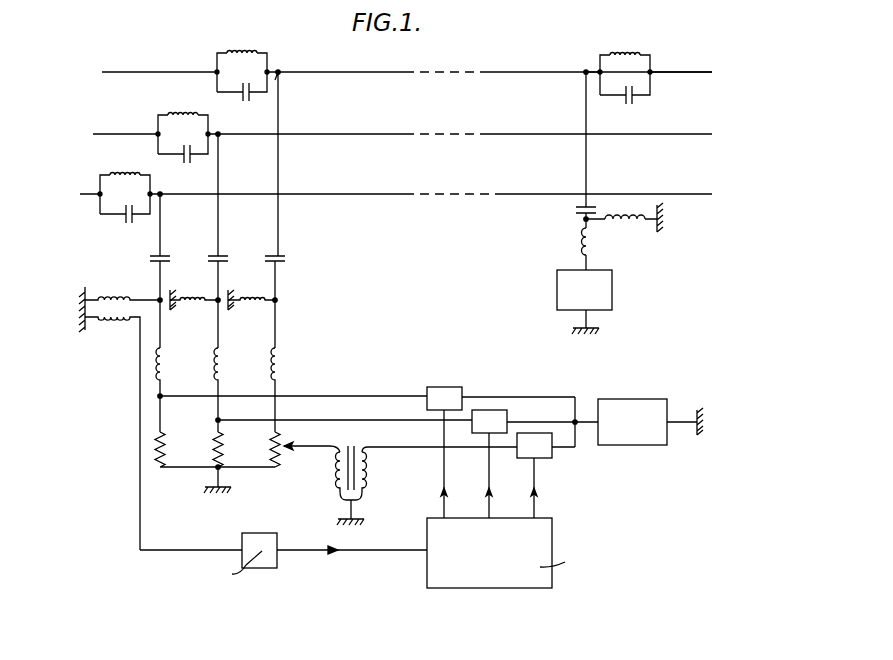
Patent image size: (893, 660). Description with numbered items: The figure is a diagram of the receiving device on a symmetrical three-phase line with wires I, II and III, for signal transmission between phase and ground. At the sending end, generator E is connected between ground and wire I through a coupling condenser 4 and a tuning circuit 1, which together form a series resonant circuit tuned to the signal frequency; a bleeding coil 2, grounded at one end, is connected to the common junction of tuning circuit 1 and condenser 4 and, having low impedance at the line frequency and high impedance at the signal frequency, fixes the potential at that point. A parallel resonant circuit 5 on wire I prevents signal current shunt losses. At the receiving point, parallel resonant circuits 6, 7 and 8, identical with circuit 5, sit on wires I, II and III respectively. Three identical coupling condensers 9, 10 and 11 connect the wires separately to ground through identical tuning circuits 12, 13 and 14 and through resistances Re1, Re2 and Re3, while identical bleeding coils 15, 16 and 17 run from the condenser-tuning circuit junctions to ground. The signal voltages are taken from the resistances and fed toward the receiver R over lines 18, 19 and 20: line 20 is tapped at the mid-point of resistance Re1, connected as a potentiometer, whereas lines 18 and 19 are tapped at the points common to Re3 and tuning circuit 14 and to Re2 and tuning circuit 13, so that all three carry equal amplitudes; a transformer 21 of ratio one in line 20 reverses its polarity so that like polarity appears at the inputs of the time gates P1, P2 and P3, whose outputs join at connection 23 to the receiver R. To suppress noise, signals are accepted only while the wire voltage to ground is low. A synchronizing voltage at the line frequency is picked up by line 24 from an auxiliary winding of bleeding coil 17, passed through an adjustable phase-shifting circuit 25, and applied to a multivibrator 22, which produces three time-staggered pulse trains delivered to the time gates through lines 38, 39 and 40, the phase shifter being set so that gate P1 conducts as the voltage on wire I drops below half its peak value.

The wire I is at (289, 73).
The wire II is at (289, 135).
The wire III is at (289, 195).
The tuning circuit 1 is at (590, 249).
The bleeding coil 2 is at (636, 223).
The coupling condenser 4 is at (577, 209).
The parallel resonant circuit 5 is at (609, 72).
The parallel resonant circuit 6 is at (226, 72).
The parallel resonant circuit 7 is at (167, 134).
The parallel resonant circuit 8 is at (109, 194).
The coupling condenser 9 is at (281, 255).
The coupling condenser 10 is at (224, 255).
The coupling condenser 11 is at (166, 255).
The tuning circuit 12 is at (280, 358).
The tuning circuit 13 is at (223, 358).
The tuning circuit 14 is at (165, 358).
The bleeding coil 15 is at (246, 298).
The bleeding coil 16 is at (186, 298).
The bleeding coil 17 is at (110, 298).
The line 18 is at (179, 394).
The line 19 is at (237, 418).
The line 20 is at (292, 445).
The transformer 21 is at (350, 446).
The multivibrator 22 is at (558, 553).
The connection to receiver 23 is at (585, 406).
The line 24 is at (140, 522).
The adjustable phase-shifting circuit 25 is at (269, 570).
The line 38 is at (536, 494).
The line 39 is at (491, 494).
The line 40 is at (446, 494).
The generator E is at (604, 302).
The receiver R is at (637, 445).
The time gate P1 is at (546, 427).
The time gate P2 is at (535, 421).
The time gate P3 is at (501, 398).
The resistance Re1 is at (280, 458).
The resistance Re2 is at (223, 447).
The resistance Re3 is at (165, 447).